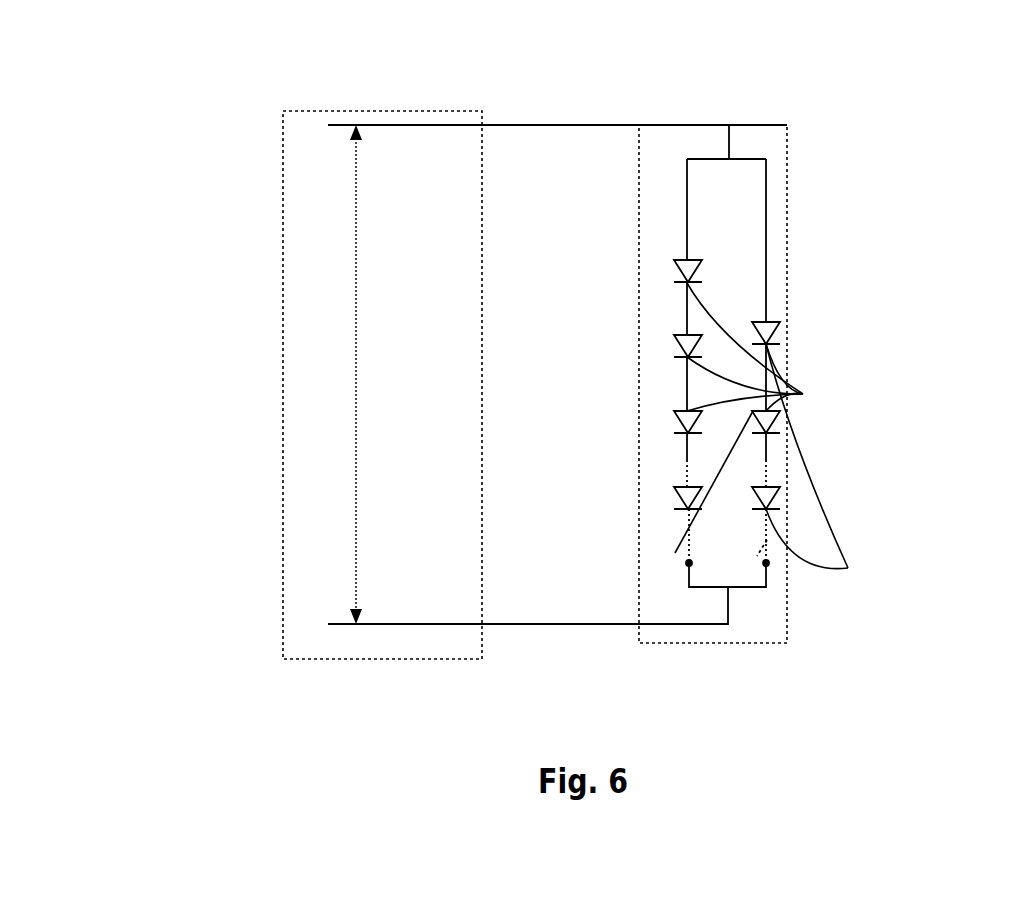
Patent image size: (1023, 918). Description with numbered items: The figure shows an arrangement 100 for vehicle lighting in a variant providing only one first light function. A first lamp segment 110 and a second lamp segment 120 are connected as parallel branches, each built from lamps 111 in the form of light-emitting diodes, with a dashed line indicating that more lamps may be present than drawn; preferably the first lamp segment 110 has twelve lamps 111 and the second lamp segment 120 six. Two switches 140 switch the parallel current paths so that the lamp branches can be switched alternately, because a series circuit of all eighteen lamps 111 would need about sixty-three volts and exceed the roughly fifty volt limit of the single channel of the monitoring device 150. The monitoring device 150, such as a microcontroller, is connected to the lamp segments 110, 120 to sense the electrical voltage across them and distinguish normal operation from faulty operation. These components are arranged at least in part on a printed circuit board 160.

The arrangement 100 is at (204, 84).
The first lamp segment 110 is at (650, 233).
The lamps 111 is at (788, 436).
The second lamp segment 120 is at (890, 315).
The switch 140 is at (666, 565).
The monitoring device 150 is at (283, 627).
The printed circuit board 160 is at (787, 612).